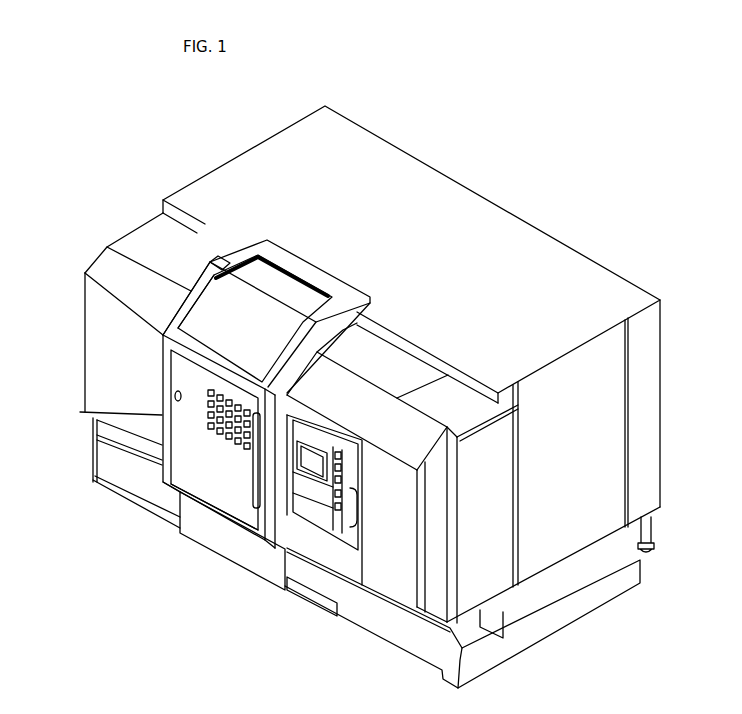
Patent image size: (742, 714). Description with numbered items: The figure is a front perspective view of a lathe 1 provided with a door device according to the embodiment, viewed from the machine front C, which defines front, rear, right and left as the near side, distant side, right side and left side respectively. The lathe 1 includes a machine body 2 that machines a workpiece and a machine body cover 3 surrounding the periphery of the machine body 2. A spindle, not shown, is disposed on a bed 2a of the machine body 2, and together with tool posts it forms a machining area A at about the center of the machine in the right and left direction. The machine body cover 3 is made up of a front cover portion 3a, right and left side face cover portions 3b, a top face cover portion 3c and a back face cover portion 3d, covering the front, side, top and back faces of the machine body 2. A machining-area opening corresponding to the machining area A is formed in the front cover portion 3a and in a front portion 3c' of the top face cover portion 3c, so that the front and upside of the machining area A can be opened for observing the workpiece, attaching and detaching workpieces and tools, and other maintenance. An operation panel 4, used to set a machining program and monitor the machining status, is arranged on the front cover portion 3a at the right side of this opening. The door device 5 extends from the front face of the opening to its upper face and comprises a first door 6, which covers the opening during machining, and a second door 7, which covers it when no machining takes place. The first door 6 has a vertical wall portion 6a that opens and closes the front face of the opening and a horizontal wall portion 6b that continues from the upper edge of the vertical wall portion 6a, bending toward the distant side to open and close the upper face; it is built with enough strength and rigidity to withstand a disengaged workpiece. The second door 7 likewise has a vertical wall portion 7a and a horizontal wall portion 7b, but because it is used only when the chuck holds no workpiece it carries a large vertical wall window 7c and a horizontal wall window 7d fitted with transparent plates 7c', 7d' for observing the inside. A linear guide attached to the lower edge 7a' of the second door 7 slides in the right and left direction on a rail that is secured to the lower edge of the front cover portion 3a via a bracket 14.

The lathe 1 is at (481, 160).
The machine body 2 is at (516, 250).
The bed 2a is at (553, 602).
The machine body cover 3 is at (597, 262).
The front cover portion 3a is at (92, 365).
The side face cover portion 3b is at (617, 400).
The top face cover portion 3c is at (411, 254).
The front portion of the top face cover portion 3c' is at (138, 241).
The back face cover portion 3d is at (662, 347).
The operation panel 4 is at (323, 517).
The door device 5 is at (103, 541).
The first door 6 is at (211, 452).
The vertical wall portion 6a is at (217, 485).
The horizontal wall portion 6b is at (270, 282).
The second door 7 is at (156, 438).
The vertical wall portion 7a is at (195, 468).
The lower edge 7a' is at (224, 544).
The horizontal wall portion 7b is at (232, 262).
The vertical wall window 7c is at (148, 380).
The transparent plate 7c' is at (183, 390).
The horizontal wall window 7d is at (255, 274).
The transparent plate 7d' is at (183, 294).
The bracket 14 is at (297, 597).
The machining area A is at (252, 343).
The machine front C is at (175, 572).